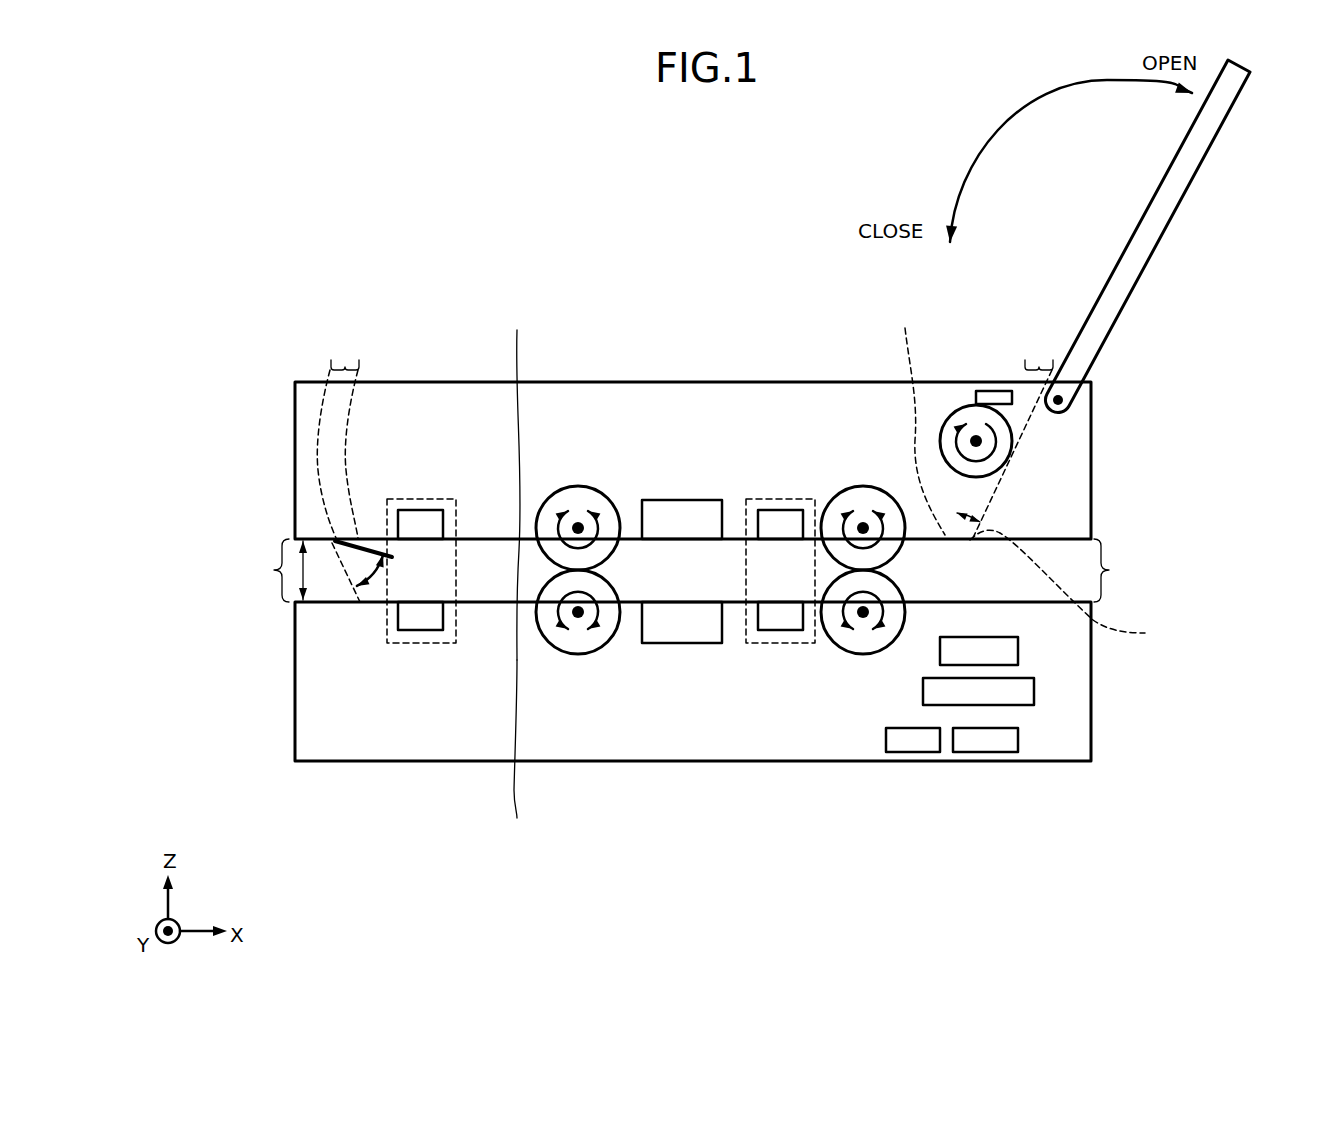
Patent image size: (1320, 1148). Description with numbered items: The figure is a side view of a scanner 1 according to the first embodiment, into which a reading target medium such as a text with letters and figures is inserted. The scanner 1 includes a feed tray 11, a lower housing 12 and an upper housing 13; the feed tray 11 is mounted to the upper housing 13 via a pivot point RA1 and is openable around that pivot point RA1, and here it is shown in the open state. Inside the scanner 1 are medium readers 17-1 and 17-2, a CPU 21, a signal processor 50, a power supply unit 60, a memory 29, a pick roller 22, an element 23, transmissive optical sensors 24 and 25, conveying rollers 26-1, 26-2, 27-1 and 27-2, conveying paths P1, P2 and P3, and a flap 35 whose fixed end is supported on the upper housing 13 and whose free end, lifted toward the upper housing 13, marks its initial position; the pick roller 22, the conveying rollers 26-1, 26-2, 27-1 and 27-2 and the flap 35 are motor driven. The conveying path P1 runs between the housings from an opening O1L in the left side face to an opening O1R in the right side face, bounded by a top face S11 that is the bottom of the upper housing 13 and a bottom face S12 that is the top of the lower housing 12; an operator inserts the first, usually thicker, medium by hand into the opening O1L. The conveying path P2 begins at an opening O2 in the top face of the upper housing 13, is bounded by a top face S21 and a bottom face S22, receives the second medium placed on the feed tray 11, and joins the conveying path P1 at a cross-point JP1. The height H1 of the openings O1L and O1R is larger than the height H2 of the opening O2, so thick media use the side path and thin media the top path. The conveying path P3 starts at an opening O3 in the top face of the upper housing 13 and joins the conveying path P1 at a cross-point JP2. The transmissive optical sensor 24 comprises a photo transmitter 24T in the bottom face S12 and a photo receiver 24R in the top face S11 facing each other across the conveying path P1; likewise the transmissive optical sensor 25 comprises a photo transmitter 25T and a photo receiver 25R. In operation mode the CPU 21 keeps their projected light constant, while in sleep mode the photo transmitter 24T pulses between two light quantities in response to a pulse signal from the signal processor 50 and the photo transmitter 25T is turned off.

The scanner 1 is at (700, 238).
The feed tray 11 is at (1190, 178).
The lower housing 12 is at (1078, 749).
The upper housing 13 is at (657, 397).
The medium reader 17-1 is at (683, 510).
The medium reader 17-2 is at (682, 630).
The CPU 21 is at (992, 738).
The pick roller 22 is at (950, 413).
The sensor 23 is at (993, 397).
The transmissive optical sensor 24 is at (437, 643).
The photo receiver 24R is at (422, 525).
The photo transmitter 24T is at (423, 617).
The transmissive optical sensor 25 is at (800, 643).
The photo receiver 25R is at (780, 523).
The photo transmitter 25T is at (772, 623).
The conveying roller 26-1 is at (578, 486).
The conveying roller 26-2 is at (578, 654).
The conveying roller 27-1 is at (863, 486).
The conveying roller 27-2 is at (863, 654).
The memory 29 is at (915, 738).
The flap 35 is at (368, 547).
The signal processor 50 is at (1028, 693).
The power supply unit 60 is at (1003, 651).
The conveying path P1 is at (493, 565).
The conveying path P2 is at (945, 537).
The conveying path P3 is at (340, 422).
The opening O1L is at (273, 570).
The opening O1R is at (1109, 570).
The opening O2 is at (1039, 367).
The opening O3 is at (345, 367).
The top face S11 is at (517, 481).
The bottom face S12 is at (517, 751).
The top face S21 is at (916, 419).
The bottom face S22 is at (1079, 587).
The width of height H1 is at (305, 572).
The width of height H2 is at (975, 519).
The cross-point JP1 is at (951, 540).
The cross-point JP2 is at (337, 542).
The pivot point RA1 is at (1065, 398).